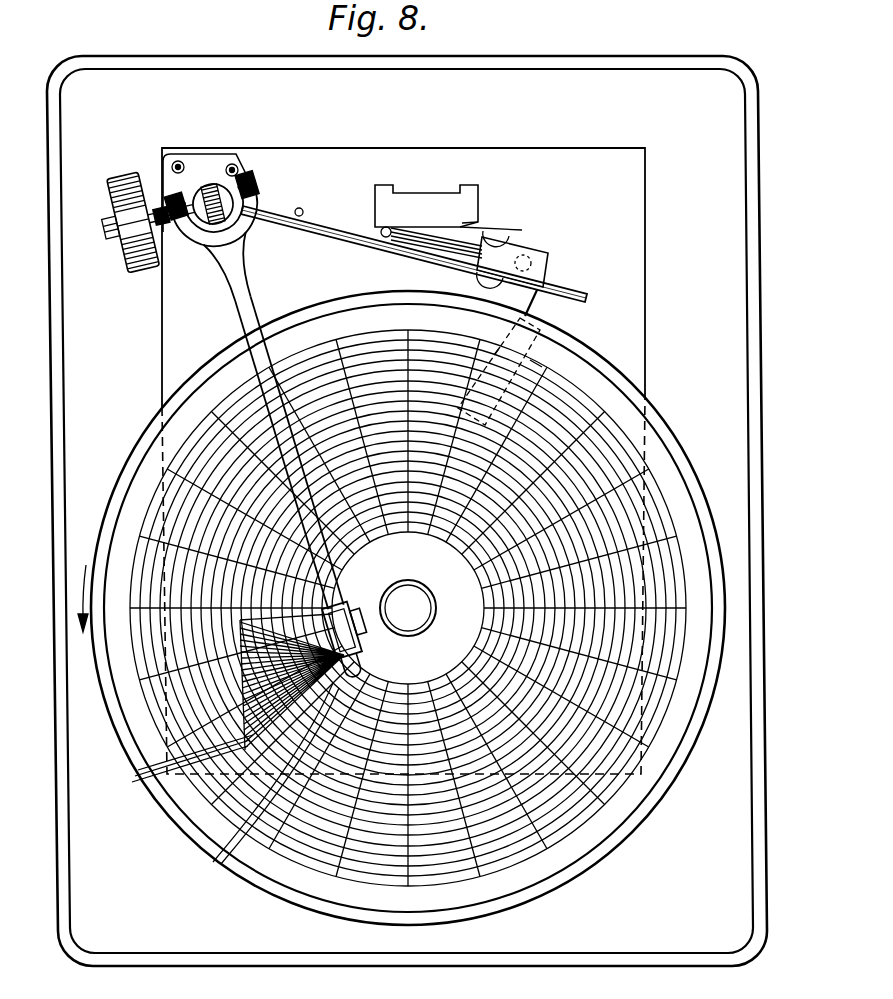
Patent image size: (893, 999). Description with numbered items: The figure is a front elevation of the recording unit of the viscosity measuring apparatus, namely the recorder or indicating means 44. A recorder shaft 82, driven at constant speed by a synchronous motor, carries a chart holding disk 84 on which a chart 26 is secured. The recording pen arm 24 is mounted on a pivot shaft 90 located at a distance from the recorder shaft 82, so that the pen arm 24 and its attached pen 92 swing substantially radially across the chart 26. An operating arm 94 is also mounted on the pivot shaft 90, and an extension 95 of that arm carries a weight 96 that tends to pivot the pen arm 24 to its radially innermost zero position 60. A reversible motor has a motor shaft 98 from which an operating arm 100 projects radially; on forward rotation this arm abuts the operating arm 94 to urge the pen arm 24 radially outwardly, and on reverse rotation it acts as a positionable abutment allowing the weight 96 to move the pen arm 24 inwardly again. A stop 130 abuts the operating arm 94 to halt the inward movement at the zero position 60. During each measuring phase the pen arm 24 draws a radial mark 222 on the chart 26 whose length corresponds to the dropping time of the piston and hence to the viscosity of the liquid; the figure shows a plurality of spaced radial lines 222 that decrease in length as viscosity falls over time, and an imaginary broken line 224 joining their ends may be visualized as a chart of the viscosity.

The recording pen arm 24 is at (253, 307).
The chart 26 is at (633, 500).
The recorder or indicating means 44 is at (757, 317).
The zero position 60 is at (333, 605).
The recorder shaft 82 is at (420, 606).
The chart holding disk 84 is at (666, 438).
The pivot shaft 90 is at (215, 183).
The pen 92 is at (352, 618).
The operating arm 94 is at (335, 237).
The extension 95 is at (162, 196).
The weight 96 is at (122, 177).
The motor shaft 98 is at (531, 263).
The operating arm 100 is at (410, 250).
The stop 130 is at (302, 209).
The radial mark 222 is at (266, 783).
The imaginary broken line 224 is at (222, 707).